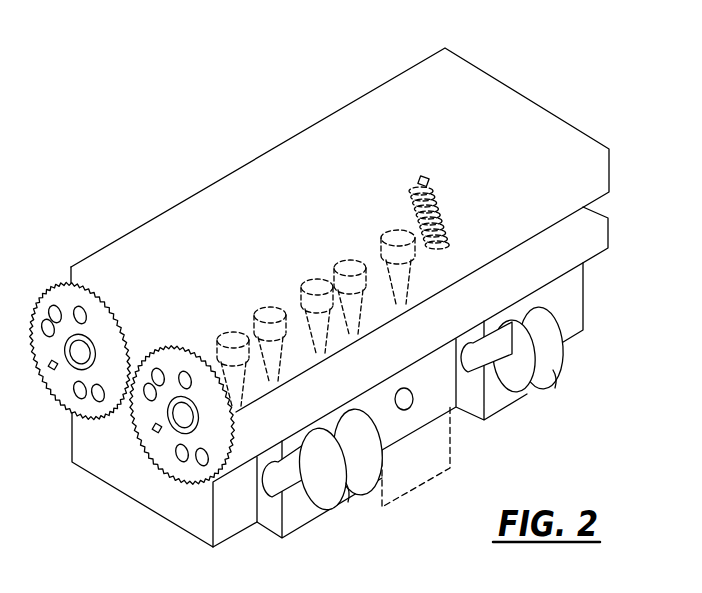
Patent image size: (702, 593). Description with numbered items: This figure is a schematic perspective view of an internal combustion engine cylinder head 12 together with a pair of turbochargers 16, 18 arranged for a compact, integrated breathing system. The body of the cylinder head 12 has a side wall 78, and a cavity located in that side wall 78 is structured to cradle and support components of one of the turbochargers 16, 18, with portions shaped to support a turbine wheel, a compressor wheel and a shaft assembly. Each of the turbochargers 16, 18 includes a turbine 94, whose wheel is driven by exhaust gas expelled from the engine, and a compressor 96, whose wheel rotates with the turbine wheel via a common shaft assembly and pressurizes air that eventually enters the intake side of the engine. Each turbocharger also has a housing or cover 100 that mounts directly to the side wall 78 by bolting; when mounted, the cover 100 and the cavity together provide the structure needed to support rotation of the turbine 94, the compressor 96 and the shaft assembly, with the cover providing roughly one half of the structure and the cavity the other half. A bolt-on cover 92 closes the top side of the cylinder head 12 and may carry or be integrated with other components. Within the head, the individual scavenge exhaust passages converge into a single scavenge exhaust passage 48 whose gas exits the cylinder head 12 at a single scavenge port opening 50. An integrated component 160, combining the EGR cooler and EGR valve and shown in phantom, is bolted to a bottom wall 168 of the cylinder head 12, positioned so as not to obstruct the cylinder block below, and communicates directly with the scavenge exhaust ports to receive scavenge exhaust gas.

The cylinder head 12 is at (110, 492).
The turbocharger 16 is at (328, 522).
The turbocharger 18 is at (538, 402).
The single scavenge exhaust passage 48 is at (410, 400).
The single scavenge port opening 50 is at (396, 398).
The side wall 78 is at (227, 517).
The cover 92 is at (499, 95).
The turbine 94 is at (365, 472).
The compressor 96 is at (327, 498).
The cover 100 is at (347, 497).
The integrated component 160 is at (420, 488).
The bottom wall 168 is at (232, 540).